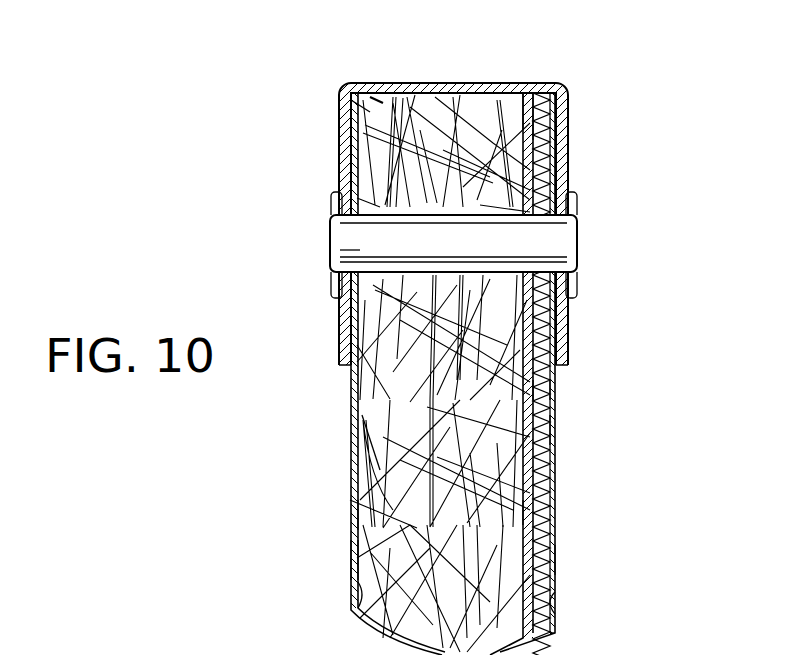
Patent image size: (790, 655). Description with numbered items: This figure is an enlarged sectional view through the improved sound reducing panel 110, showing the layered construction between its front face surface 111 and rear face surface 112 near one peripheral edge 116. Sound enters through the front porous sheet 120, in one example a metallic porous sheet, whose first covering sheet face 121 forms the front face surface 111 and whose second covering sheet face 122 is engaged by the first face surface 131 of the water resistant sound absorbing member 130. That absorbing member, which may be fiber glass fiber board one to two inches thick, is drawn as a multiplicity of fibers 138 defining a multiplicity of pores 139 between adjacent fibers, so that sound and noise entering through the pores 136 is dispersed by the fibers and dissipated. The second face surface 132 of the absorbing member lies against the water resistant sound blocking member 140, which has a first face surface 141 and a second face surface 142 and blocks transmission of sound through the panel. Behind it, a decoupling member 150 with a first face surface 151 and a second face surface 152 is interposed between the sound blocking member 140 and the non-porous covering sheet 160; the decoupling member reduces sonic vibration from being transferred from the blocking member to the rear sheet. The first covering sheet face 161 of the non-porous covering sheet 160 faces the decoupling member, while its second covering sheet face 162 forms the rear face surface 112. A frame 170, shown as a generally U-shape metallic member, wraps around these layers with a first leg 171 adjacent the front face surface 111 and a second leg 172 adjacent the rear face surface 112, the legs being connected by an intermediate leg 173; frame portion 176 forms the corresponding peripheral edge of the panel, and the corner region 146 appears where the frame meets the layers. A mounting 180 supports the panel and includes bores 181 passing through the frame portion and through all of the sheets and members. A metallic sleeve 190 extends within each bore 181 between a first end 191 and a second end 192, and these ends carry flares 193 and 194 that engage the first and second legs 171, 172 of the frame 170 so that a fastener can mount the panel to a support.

The improved sound reducing panel 110 is at (612, 86).
The front face surface 111 is at (353, 516).
The rear face surface 112 is at (556, 560).
The peripheral edge 116 is at (456, 82).
The front porous sheet 120 is at (350, 470).
The first covering sheet face 121 is at (352, 560).
The second covering sheet face 122 is at (356, 610).
The water resistant sound absorbing member 130 is at (375, 412).
The first face surface 131 is at (356, 430).
The second face surface 132 is at (538, 512).
The pores 136 is at (497, 82).
The fibers 138 is at (373, 112).
The pores 139 is at (383, 105).
The water resistant sound blocking member 140 is at (543, 107).
The first face surface 141 is at (522, 93).
The second face surface 142 is at (562, 122).
The inner right corner 146 is at (542, 93).
The decoupling member 150 is at (540, 327).
The first face surface 151 is at (535, 356).
The second face surface 152 is at (593, 386).
The non-porous covering sheet 160 is at (553, 470).
The first covering sheet face 161 is at (556, 612).
The second covering sheet face 162 is at (558, 430).
The frame 170 is at (396, 82).
The first leg 171 is at (340, 134).
The second leg 172 is at (575, 151).
The intermediate leg 173 is at (433, 80).
The frame portion 176 is at (381, 82).
The mounting 180 is at (330, 282).
The bores 181 is at (577, 246).
The metallic sleeve 190 is at (329, 240).
The first end 191 is at (329, 250).
The second end 192 is at (580, 273).
The flare 193 is at (333, 205).
The flare 194 is at (580, 210).